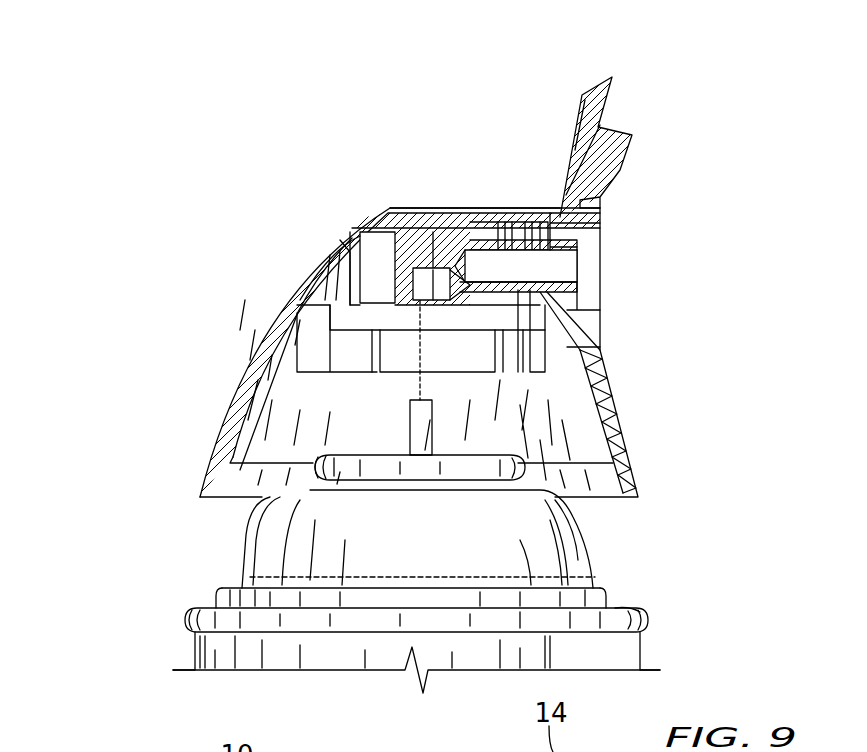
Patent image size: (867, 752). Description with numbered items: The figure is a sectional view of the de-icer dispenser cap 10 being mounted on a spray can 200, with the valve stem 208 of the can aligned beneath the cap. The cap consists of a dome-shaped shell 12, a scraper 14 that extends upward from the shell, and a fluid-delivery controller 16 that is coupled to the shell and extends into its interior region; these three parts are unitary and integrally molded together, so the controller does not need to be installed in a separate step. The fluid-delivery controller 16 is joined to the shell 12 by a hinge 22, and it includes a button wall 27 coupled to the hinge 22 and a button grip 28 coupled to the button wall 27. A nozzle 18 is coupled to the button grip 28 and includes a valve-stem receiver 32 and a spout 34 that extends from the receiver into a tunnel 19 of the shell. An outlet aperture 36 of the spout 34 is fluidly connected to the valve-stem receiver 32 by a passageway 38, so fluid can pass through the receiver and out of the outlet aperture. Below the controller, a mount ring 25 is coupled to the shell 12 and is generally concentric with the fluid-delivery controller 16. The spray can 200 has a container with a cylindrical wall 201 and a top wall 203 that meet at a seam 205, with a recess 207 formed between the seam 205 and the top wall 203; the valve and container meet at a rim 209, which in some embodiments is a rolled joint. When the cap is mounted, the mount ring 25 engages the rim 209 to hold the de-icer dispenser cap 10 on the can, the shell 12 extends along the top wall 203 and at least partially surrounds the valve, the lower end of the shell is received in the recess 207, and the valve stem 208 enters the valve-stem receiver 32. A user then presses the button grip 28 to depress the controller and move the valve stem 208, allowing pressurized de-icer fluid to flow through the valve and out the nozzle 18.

The de-icer dispenser cap 10 is at (272, 223).
The dome-shaped shell 12 is at (224, 392).
The scraper 14 is at (560, 112).
The fluid-delivery controller 16 is at (392, 209).
The nozzle 18 is at (510, 217).
The tunnel 19 is at (584, 232).
The hinge 22 is at (337, 272).
The mount ring 25 is at (289, 329).
The button wall 27 is at (346, 244).
The button grip 28 is at (419, 212).
The valve-stem receiver 32 is at (429, 252).
The spout 34 is at (542, 222).
The outlet aperture 36 is at (583, 268).
The passageway 38 is at (500, 260).
The spray can 200 is at (159, 600).
The cylindrical wall 201 is at (643, 657).
The top wall 203 is at (246, 560).
The seam 205 is at (184, 620).
The recess 207 is at (632, 606).
The valve stem 208 is at (405, 414).
The rim 209 is at (308, 471).